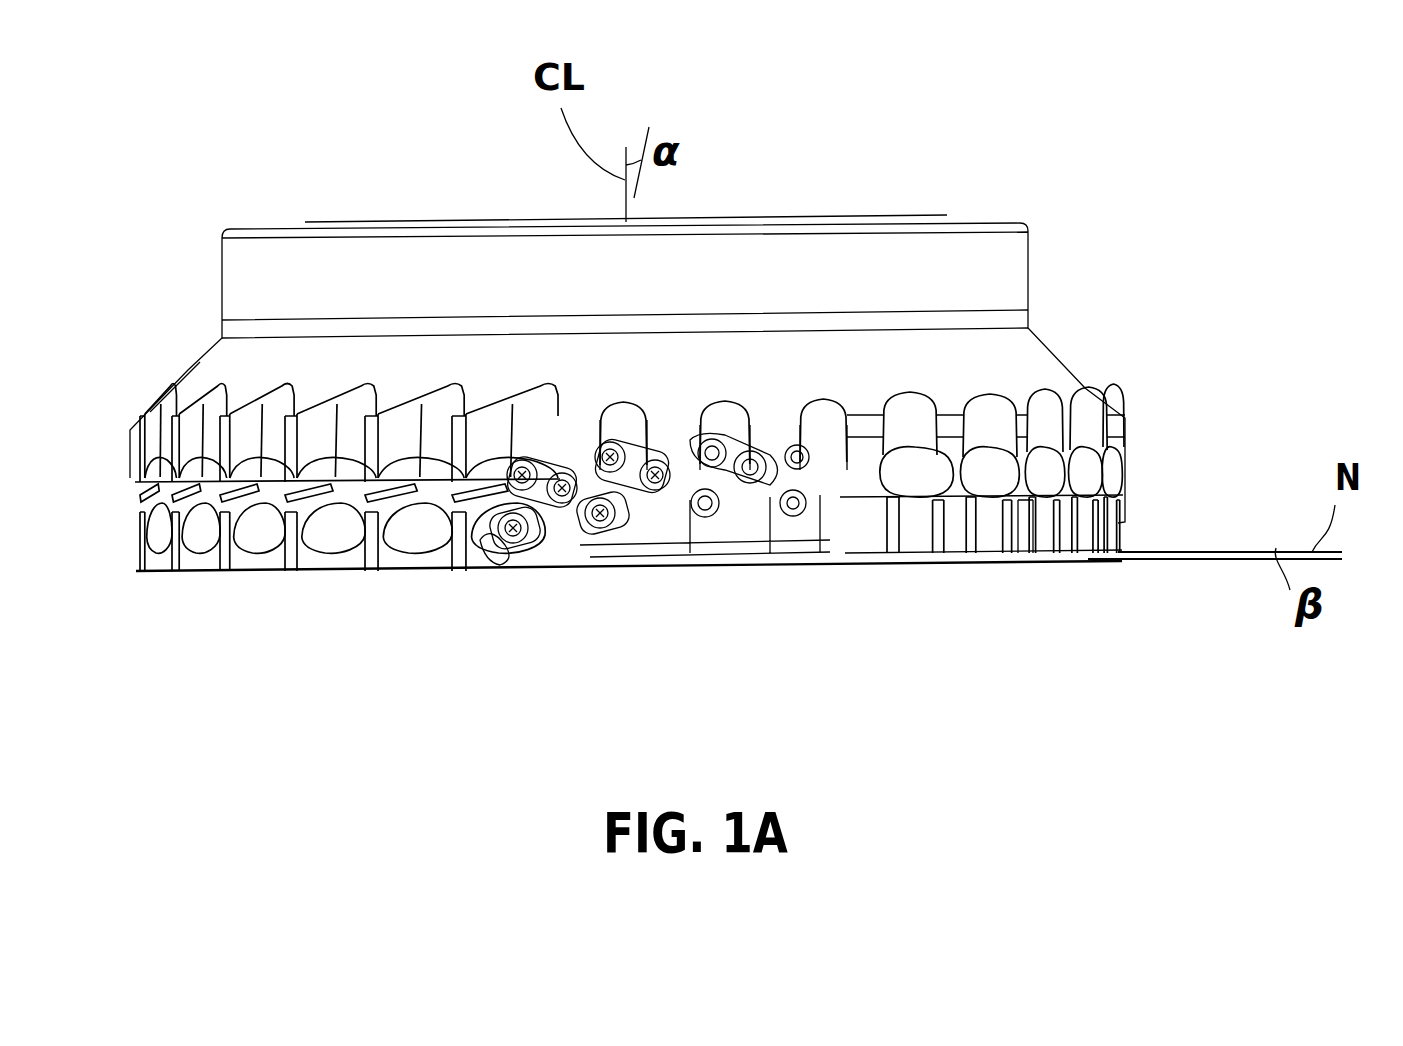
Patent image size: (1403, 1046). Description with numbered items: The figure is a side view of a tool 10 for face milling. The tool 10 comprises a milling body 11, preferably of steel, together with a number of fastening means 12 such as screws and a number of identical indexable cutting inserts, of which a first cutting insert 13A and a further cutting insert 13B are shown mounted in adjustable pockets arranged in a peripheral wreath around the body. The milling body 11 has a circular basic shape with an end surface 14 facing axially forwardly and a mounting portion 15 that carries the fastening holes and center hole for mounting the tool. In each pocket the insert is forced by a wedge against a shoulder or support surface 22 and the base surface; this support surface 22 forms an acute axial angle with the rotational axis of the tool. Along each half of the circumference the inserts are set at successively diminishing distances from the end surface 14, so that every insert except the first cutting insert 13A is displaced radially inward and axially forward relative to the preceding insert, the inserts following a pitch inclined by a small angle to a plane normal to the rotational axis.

The tool 10 is at (747, 403).
The milling body 11 is at (1055, 373).
The fastening means 12 is at (500, 565).
The first cutting insert 13A is at (618, 540).
The cutting insert 13B is at (550, 548).
The end surface 14 is at (762, 567).
The mounting portion 15 is at (983, 262).
The support surface 22 is at (1035, 527).